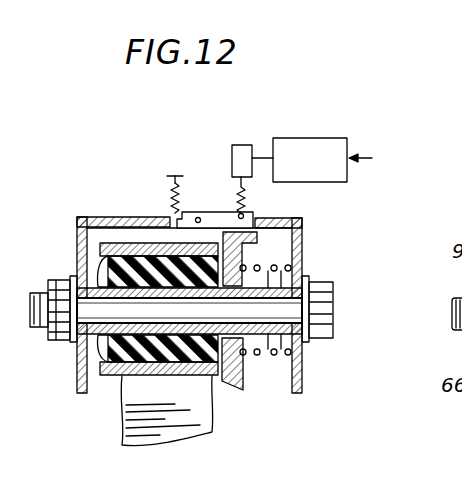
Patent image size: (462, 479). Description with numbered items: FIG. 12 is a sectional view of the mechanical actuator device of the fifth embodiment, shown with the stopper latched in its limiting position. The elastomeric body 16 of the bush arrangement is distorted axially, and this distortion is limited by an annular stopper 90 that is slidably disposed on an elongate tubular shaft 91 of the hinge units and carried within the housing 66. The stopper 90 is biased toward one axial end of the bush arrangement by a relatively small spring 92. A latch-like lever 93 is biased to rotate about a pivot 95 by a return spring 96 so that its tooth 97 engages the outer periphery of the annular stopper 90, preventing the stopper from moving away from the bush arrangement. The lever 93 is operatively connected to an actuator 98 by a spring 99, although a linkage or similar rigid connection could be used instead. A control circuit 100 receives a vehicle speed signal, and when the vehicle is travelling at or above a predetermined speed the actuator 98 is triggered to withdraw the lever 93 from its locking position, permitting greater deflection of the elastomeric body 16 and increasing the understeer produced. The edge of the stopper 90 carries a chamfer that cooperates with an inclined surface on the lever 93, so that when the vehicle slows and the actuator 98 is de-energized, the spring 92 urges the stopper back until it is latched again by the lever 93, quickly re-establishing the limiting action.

The elastomeric body 16 is at (100, 348).
The housing 66 is at (298, 371).
The annular stopper 90 is at (238, 374).
The elongate tubular shaft 91 is at (93, 283).
The spring 92 is at (273, 355).
The lever 93 is at (222, 212).
The pivot 95 is at (198, 217).
The return spring 96 is at (171, 204).
The tooth 97 is at (240, 233).
The actuator 98 is at (241, 145).
The spring 99 is at (245, 197).
The control circuit 100 is at (330, 138).